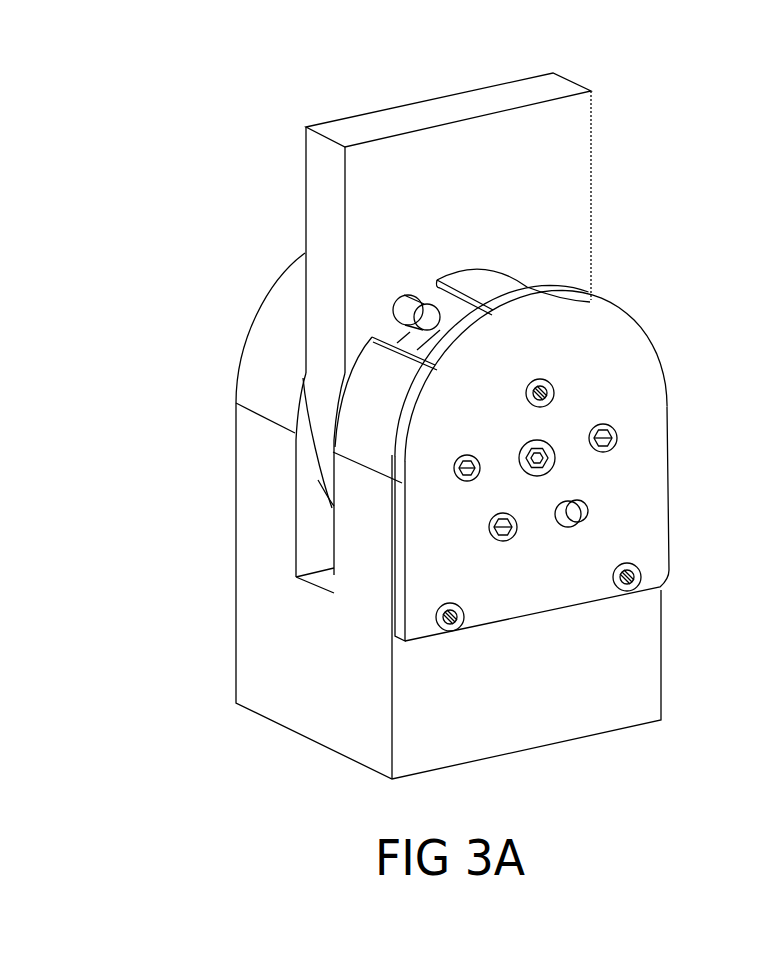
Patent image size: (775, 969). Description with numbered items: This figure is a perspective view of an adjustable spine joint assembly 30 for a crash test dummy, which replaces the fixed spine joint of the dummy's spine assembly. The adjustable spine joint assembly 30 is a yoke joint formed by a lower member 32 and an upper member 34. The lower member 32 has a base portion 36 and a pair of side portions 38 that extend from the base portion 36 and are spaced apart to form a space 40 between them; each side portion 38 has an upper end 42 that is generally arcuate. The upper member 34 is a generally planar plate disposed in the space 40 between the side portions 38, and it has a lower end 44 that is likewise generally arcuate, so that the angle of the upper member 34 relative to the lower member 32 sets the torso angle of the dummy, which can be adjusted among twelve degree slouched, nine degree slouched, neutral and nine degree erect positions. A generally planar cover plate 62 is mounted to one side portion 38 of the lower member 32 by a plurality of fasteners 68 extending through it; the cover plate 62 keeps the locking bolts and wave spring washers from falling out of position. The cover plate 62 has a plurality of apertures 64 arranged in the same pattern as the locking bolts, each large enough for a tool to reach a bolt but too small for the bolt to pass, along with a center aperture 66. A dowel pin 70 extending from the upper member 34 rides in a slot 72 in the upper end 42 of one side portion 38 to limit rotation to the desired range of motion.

The adjustable spine joint assembly 30 is at (686, 199).
The lower member 32 is at (236, 663).
The upper member 34 is at (440, 95).
The base portion 36 is at (283, 710).
The side portions 38 is at (257, 477).
The space 40 is at (315, 525).
The upper end 42 is at (276, 322).
The lower end 44 is at (323, 467).
The cover plate 62 is at (594, 327).
The apertures 64 is at (607, 428).
The center aperture 66 is at (557, 461).
The fasteners 68 is at (546, 394).
The dowel pin 70 is at (400, 302).
The slot 72 is at (440, 300).